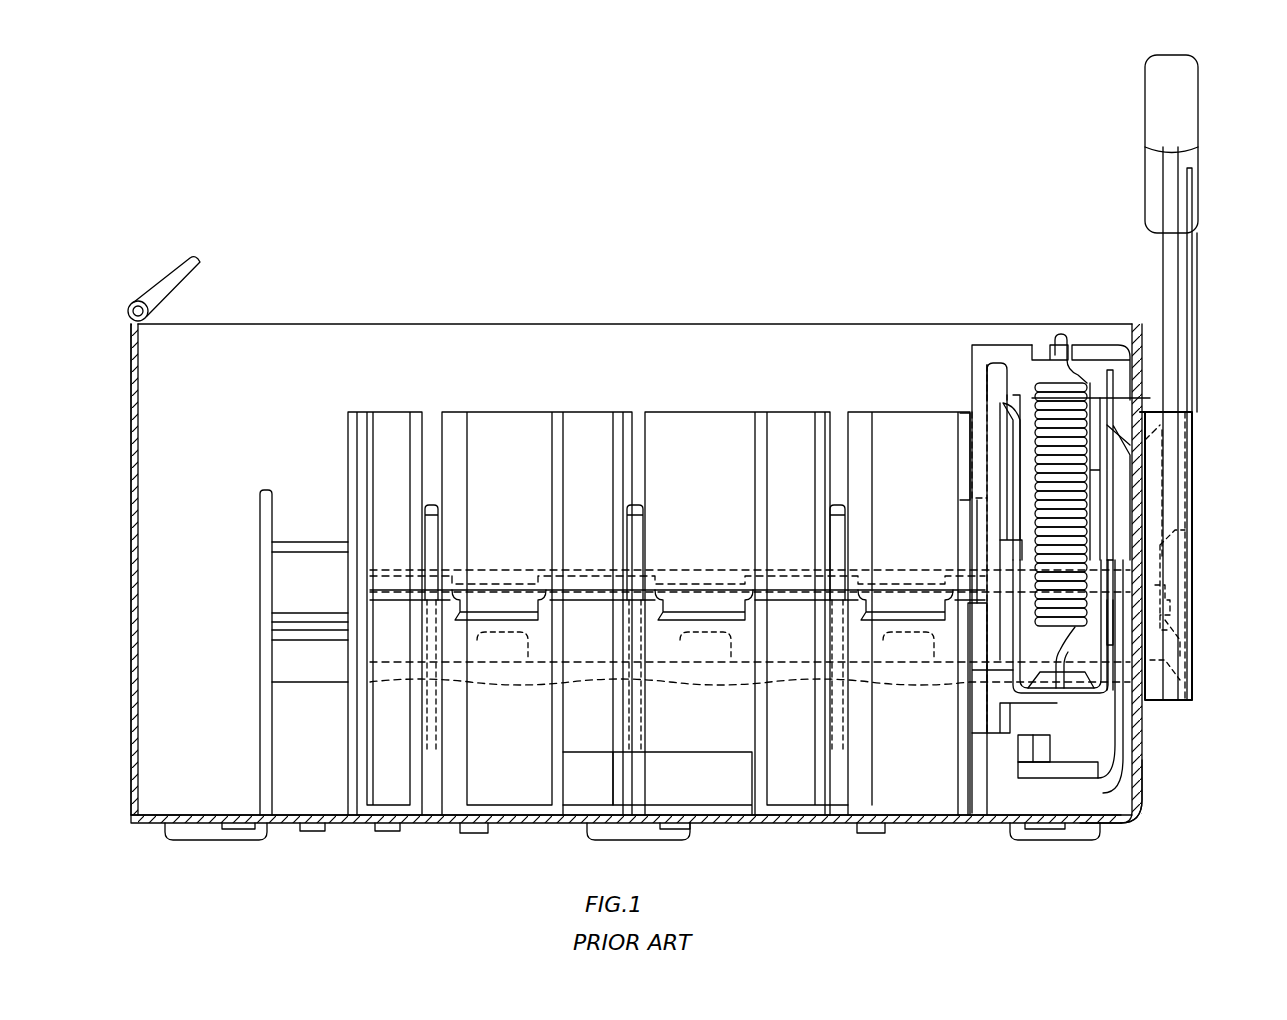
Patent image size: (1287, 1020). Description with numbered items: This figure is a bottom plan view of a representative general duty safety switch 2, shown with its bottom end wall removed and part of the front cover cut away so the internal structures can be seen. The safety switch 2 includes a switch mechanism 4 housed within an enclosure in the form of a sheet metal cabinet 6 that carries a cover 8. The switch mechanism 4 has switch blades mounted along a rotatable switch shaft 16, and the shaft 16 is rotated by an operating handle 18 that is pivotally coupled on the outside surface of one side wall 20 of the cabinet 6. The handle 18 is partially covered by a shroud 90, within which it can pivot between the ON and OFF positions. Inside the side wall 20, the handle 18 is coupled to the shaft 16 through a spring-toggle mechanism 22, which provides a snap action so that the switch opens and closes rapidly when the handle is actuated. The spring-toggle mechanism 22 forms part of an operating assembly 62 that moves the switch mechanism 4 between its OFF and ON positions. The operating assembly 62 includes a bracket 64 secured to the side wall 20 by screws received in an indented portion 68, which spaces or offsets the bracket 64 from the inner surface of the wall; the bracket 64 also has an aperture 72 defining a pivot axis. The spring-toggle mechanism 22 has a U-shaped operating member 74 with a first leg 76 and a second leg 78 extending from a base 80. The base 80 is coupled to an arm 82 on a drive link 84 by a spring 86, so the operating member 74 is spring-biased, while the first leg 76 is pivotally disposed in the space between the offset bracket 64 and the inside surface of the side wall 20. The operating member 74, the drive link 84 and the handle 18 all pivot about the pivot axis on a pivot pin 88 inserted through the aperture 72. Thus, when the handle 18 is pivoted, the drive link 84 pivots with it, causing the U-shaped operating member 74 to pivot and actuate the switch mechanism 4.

The safety switch 2 is at (929, 871).
The switch mechanism 4 is at (505, 398).
The sheet metal cabinet 6 is at (130, 352).
The cover 8 is at (170, 278).
The switch shaft 16 is at (472, 566).
The operating handle 18 is at (1190, 165).
The side wall 20 is at (1137, 780).
The spring-toggle mechanism 22 is at (1124, 272).
The operating assembly 62 is at (1212, 262).
The bracket 64 is at (1116, 356).
The indented portion 68 is at (1142, 512).
The aperture 72 is at (1193, 624).
The U-shaped operating member 74 is at (1036, 700).
The first leg 76 is at (1098, 688).
The second leg 78 is at (1015, 458).
The base 80 is at (1078, 704).
The arm 82 is at (1113, 345).
The drive link 84 is at (1142, 712).
The spring 86 is at (1030, 400).
The pivot pin 88 is at (1170, 585).
The shroud 90 is at (1190, 372).